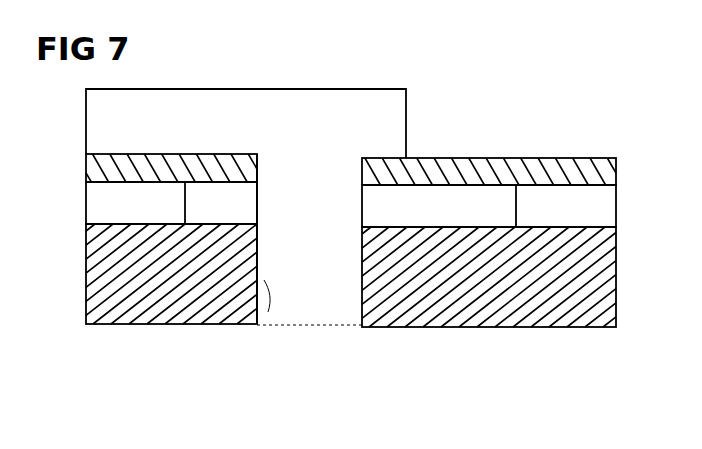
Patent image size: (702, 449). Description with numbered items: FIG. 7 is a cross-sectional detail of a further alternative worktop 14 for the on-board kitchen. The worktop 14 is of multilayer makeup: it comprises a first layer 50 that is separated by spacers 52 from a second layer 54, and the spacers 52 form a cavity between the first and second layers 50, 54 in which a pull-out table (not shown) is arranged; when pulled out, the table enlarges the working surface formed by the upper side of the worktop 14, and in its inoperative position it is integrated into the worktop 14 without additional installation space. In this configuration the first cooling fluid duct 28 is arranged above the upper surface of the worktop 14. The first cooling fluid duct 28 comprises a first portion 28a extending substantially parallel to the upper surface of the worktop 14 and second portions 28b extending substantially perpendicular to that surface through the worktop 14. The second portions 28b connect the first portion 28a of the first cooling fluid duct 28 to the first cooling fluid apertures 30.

The worktop 14 is at (548, 119).
The first cooling fluid duct 28 is at (311, 104).
The first portion of the first cooling fluid duct 28a is at (181, 109).
The second portion of the first cooling fluid duct 28b is at (234, 330).
The first cooling fluid aperture 30 is at (304, 328).
The first layer 50 is at (525, 320).
The spacer 52 is at (98, 200).
The second layer 54 is at (458, 165).